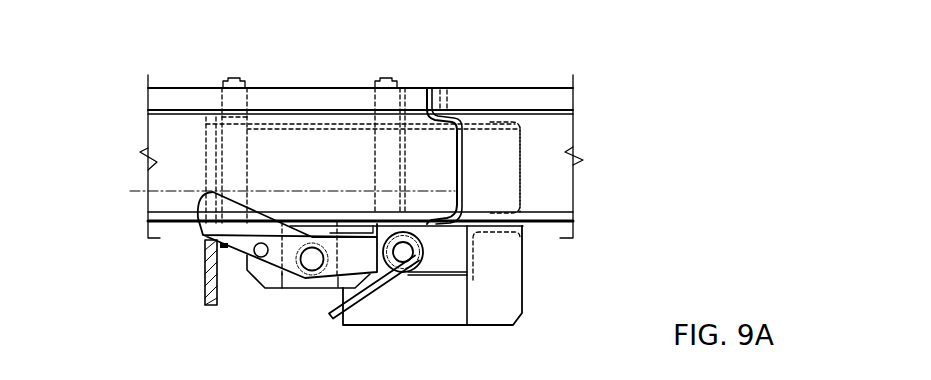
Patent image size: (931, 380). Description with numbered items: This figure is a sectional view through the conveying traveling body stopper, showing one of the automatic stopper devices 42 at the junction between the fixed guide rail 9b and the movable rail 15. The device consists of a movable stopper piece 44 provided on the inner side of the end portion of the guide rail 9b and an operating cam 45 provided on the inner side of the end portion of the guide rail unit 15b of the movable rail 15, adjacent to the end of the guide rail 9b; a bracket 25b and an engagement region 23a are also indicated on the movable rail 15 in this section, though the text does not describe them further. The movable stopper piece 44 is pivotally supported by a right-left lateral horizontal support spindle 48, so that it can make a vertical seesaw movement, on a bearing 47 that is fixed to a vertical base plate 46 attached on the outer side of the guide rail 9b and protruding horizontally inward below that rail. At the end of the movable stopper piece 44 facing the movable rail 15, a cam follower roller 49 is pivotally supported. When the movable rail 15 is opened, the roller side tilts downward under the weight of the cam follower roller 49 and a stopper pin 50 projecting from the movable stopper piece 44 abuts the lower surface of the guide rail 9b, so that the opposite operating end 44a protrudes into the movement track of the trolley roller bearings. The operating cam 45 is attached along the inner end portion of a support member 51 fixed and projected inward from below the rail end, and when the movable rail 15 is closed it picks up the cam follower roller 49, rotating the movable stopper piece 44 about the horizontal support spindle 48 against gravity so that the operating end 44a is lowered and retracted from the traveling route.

The guide rail 9b is at (177, 167).
The movable rail 15 is at (521, 86).
The guide rail unit 15b is at (557, 180).
The engagement hole 23a is at (503, 148).
The bracket 25b is at (467, 141).
The automatic stopper device 42 is at (303, 217).
The movable stopper piece 44 is at (349, 245).
The operating end 44a is at (202, 215).
The operating cam 45 is at (383, 290).
The vertical base plate 46 is at (273, 147).
The bearing 47 is at (288, 285).
The horizontal support spindle 48 is at (310, 262).
The cam follower roller 49 is at (423, 257).
The stopper pin 50 is at (255, 262).
The support member 51 is at (473, 250).